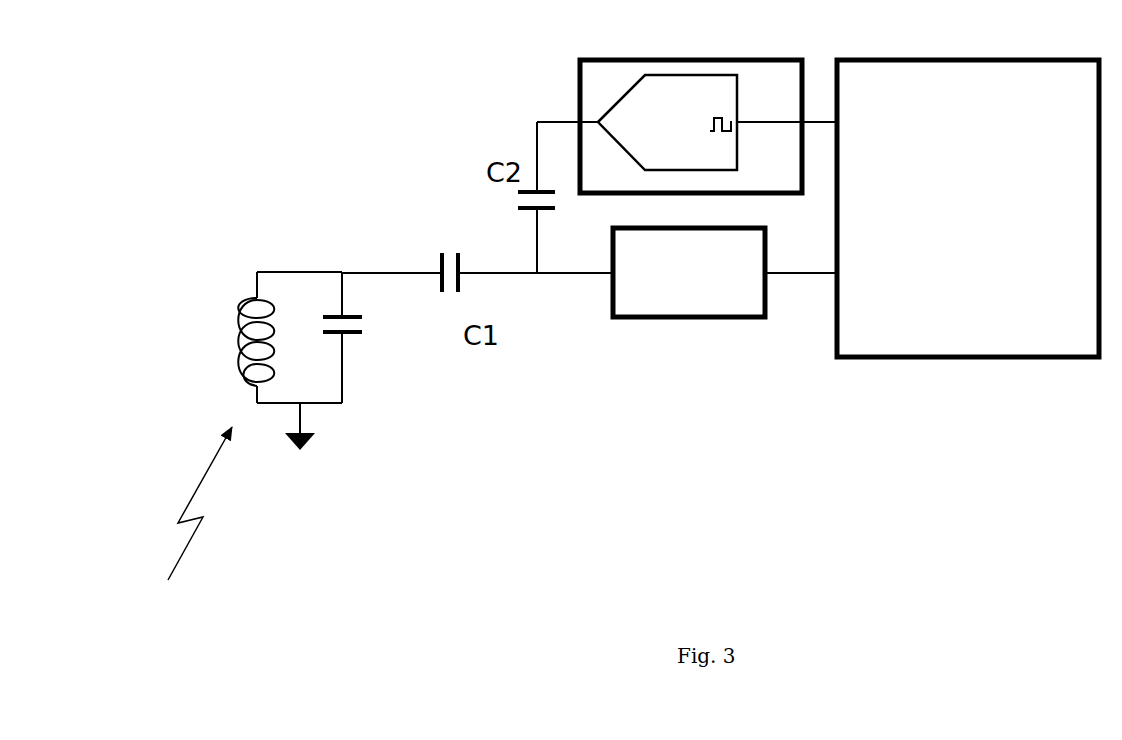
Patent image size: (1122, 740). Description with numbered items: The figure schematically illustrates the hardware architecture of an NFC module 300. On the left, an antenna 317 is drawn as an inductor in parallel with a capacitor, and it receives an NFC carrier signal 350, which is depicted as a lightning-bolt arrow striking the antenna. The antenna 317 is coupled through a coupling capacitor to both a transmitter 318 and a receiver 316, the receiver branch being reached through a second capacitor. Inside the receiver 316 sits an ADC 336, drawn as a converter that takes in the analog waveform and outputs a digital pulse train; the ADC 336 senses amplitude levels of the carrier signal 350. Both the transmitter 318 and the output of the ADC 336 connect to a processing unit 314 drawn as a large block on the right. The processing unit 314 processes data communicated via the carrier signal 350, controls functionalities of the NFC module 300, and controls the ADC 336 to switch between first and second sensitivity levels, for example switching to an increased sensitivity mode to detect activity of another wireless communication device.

The NFC module 300 is at (989, 454).
The processing unit 314 is at (945, 57).
The receiver 316 is at (683, 57).
The antenna 317 is at (229, 271).
The transmitter 318 is at (672, 317).
The ADC 336 is at (737, 110).
The NFC carrier signal 350 is at (190, 497).